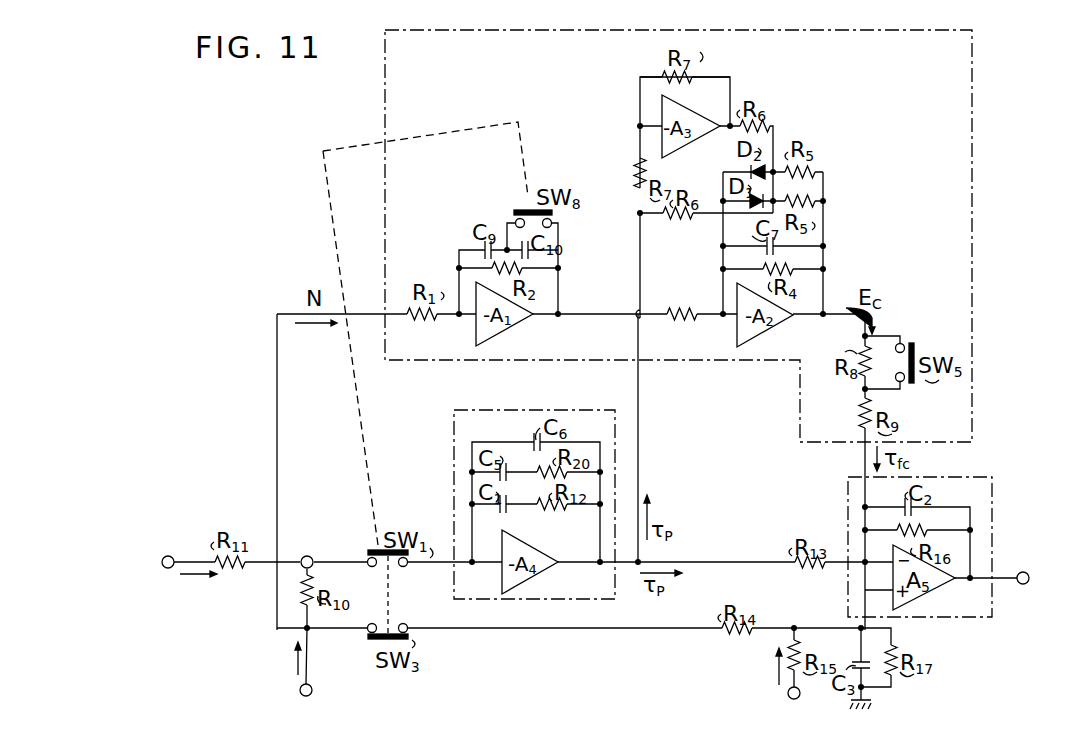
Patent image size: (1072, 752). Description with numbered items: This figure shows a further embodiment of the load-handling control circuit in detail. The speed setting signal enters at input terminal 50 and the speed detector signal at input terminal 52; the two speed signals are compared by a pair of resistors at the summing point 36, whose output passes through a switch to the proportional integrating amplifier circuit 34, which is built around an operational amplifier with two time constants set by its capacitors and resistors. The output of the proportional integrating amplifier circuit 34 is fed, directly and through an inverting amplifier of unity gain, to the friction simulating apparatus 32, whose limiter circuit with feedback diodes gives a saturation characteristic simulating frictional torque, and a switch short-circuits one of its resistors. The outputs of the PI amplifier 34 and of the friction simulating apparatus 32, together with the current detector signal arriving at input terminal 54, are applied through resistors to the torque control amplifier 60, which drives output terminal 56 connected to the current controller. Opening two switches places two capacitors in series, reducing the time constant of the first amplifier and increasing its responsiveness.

The friction simulating apparatus 32 is at (938, 38).
The proportional integrating amplifier circuit 34 is at (612, 408).
The summing point 36 is at (314, 562).
The input terminal 50 is at (186, 552).
The input terminal 52 is at (312, 690).
The input terminal 54 is at (788, 697).
The output terminal 56 is at (1034, 563).
The torque control amplifier 60 is at (994, 516).